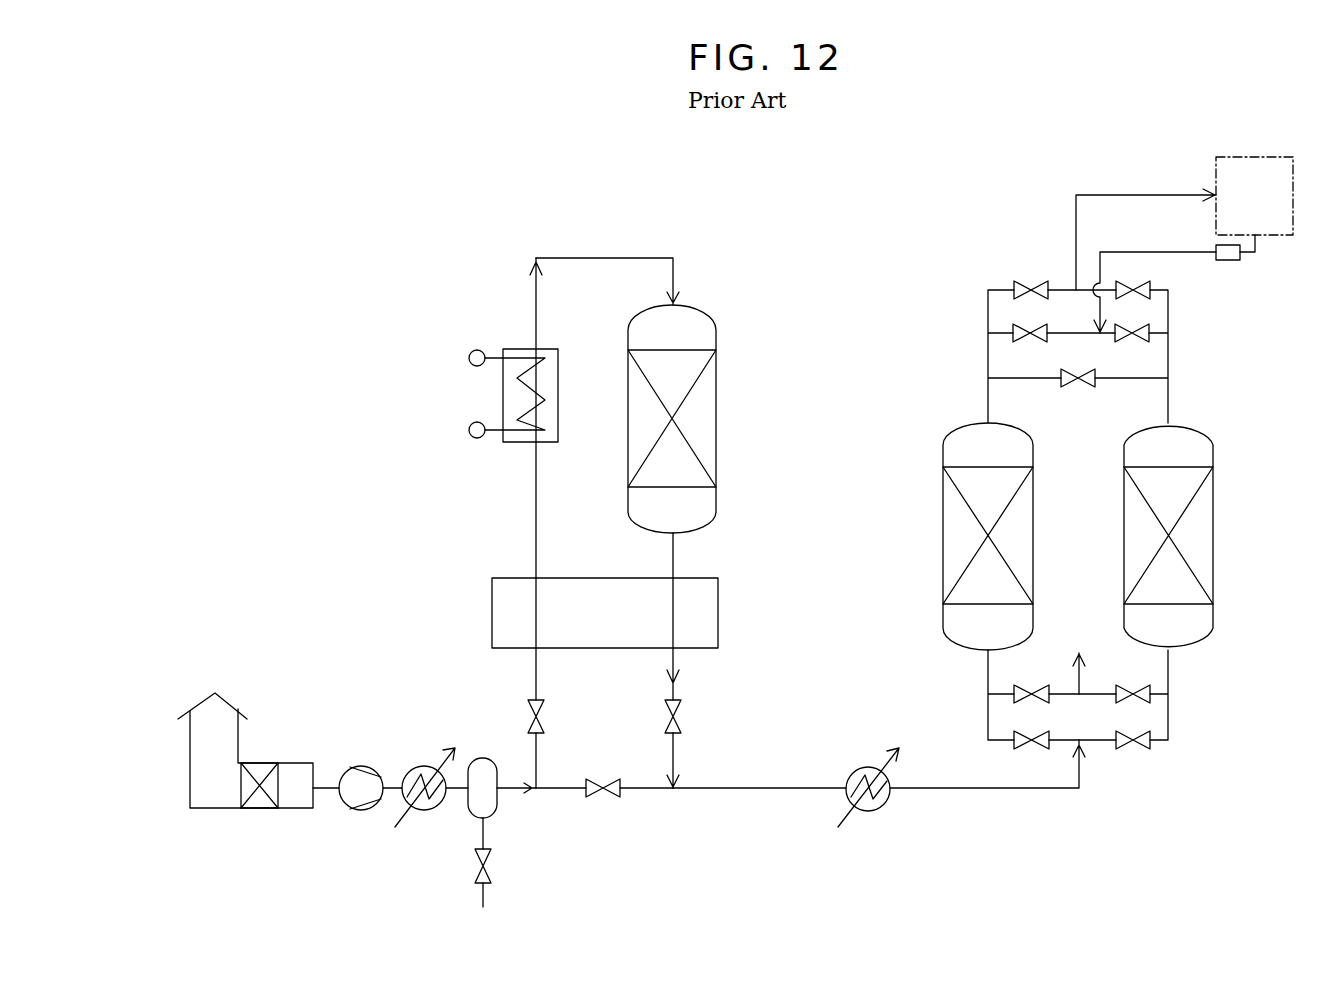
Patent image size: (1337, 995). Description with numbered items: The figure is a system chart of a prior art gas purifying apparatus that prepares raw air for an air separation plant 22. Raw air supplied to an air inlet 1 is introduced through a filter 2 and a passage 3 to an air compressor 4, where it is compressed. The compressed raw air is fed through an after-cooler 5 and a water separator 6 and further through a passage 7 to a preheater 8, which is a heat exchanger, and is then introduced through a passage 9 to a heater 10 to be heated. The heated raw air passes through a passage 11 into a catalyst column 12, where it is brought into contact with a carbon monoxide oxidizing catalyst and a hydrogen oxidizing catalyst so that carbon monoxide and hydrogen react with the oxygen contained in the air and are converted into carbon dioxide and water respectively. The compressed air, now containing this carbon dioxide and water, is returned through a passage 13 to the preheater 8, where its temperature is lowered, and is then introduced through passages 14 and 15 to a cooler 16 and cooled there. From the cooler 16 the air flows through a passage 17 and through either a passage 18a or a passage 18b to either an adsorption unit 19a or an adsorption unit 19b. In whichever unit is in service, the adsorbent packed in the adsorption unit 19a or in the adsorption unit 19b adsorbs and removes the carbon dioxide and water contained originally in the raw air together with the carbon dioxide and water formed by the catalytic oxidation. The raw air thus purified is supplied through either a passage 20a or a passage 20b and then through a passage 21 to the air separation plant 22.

The air inlet 1 is at (228, 702).
The filter 2 is at (258, 808).
The passage 3 is at (327, 786).
The air compressor 4 is at (360, 765).
The after-cooler 5 is at (412, 767).
The water separator 6 is at (483, 758).
The passage 7 is at (537, 681).
The preheater 8 is at (590, 578).
The passage 9 is at (536, 512).
The heater 10 is at (515, 349).
The passage 11 is at (611, 258).
The catalyst column 12 is at (717, 395).
The passage 13 is at (676, 557).
The passage 14 is at (675, 756).
The passage 15 is at (786, 788).
The cooler 16 is at (858, 768).
The passage 17 is at (950, 788).
The passage 18a is at (988, 675).
The passage 18b is at (1168, 668).
The adsorption unit 19a is at (943, 532).
The adsorption unit 19b is at (1213, 532).
The passage 20a is at (988, 358).
The passage 20b is at (1168, 360).
The passage 21 is at (1076, 220).
The air separation plant 22 is at (1215, 162).